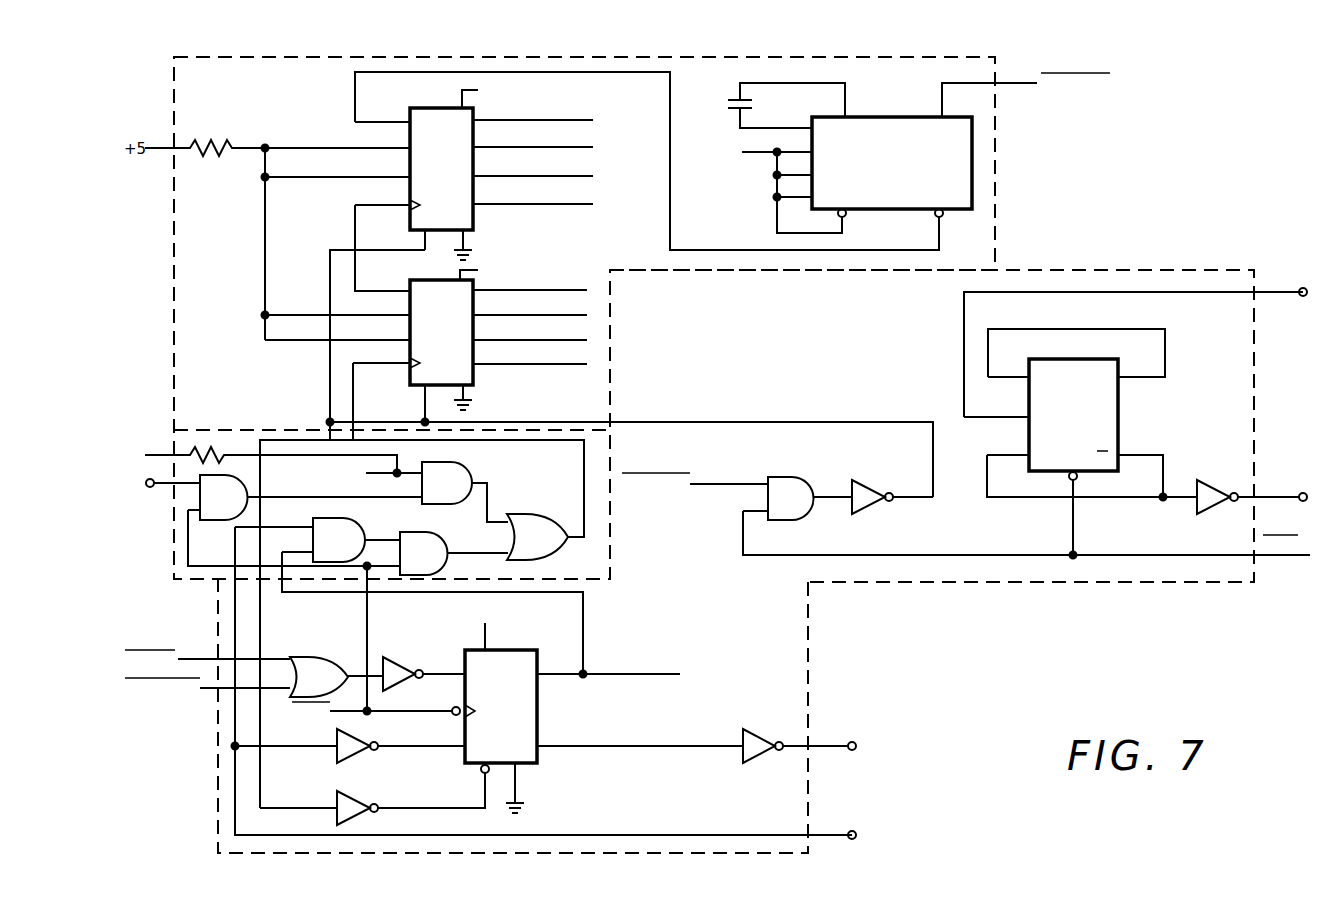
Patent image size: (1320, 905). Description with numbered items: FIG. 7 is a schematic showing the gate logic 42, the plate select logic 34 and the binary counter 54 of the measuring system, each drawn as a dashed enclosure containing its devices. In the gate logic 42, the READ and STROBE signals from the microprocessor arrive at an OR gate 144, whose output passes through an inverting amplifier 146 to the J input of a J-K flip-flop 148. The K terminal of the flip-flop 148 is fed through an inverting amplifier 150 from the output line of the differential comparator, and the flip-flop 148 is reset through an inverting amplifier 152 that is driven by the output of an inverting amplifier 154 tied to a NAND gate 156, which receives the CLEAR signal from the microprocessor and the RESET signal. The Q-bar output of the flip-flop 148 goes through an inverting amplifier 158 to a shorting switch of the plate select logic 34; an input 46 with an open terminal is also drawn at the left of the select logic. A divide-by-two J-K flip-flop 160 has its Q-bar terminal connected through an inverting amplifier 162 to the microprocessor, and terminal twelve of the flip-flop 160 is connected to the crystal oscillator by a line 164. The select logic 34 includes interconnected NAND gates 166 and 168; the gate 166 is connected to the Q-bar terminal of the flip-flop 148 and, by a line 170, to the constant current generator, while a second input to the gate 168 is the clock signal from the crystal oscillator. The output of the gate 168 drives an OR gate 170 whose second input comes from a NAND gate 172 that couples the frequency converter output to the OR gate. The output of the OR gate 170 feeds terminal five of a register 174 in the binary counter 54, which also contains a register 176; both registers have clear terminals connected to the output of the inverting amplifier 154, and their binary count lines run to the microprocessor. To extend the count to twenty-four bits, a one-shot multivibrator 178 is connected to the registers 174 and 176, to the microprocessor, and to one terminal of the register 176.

The plate select logic 34 is at (614, 452).
The gate logic 42 is at (811, 647).
The input 46 is at (154, 490).
The binary counter 54 is at (1000, 212).
The OR gate 144 is at (322, 640).
The inverting amplifier 146 is at (393, 666).
The J-K flip-flop 148 is at (517, 708).
The inverting amplifier 150 is at (355, 743).
The inverting amplifier 152 is at (355, 806).
The inverting amplifier 154 is at (868, 491).
The NAND gate 156 is at (788, 490).
The inverting amplifier 158 is at (753, 744).
The J-K flip-flop 160 is at (1131, 444).
The inverting amplifier 162 is at (1208, 491).
The line 164 is at (1162, 295).
The NAND gate 166 is at (338, 530).
The NAND gate 168 is at (425, 548).
The OR gate 170 is at (532, 522).
The NAND gate 172 is at (455, 476).
The register 174 is at (426, 322).
The register 176 is at (429, 171).
The one-shot multivibrator 178 is at (912, 153).